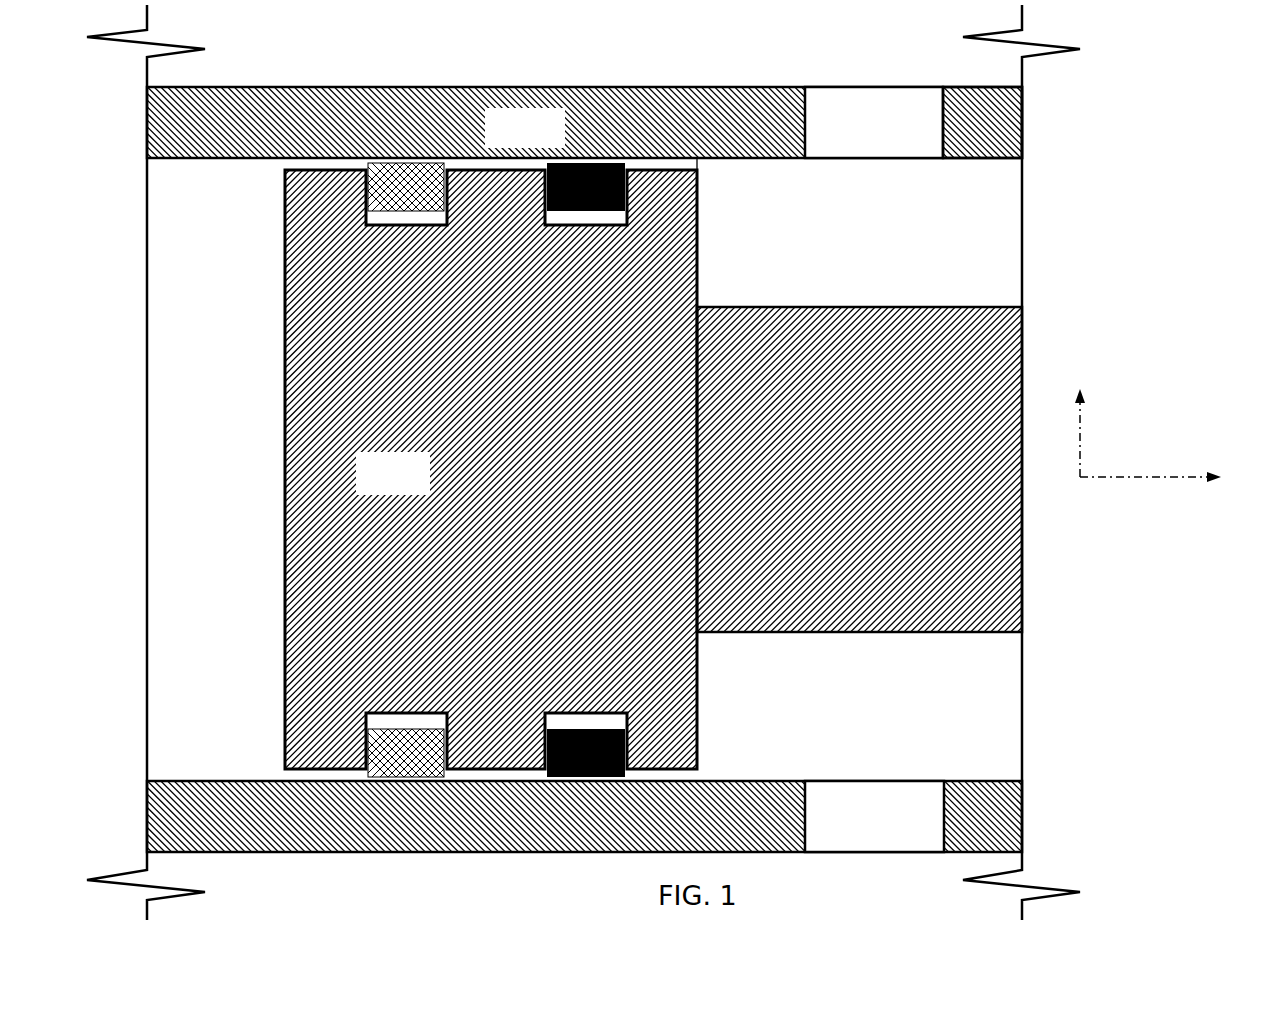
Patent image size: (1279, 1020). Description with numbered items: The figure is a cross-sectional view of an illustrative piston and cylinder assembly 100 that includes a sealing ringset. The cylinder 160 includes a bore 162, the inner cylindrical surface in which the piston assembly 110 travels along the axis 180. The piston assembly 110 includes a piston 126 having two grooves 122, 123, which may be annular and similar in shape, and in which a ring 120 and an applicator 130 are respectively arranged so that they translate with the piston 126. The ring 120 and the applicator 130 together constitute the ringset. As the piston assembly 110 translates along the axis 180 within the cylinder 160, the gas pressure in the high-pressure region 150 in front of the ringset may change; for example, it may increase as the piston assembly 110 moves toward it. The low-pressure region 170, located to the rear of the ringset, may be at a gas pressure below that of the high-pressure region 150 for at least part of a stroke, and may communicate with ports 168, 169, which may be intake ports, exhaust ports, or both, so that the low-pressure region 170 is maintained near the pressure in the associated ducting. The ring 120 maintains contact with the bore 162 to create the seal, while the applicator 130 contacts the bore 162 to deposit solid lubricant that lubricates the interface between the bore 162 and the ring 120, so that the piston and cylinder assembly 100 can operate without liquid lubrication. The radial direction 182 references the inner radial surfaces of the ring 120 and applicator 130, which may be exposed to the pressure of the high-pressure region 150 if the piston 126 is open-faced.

The piston and cylinder assembly 100 is at (948, 71).
The piston assembly 110 is at (406, 469).
The ring 120 is at (408, 172).
The groove 122 is at (343, 712).
The groove 123 is at (530, 712).
The piston 126 is at (412, 481).
The applicator 130 is at (586, 172).
The high-pressure region 150 is at (218, 398).
The cylinder 160 is at (545, 134).
The bore 162 is at (1000, 168).
The port 168 is at (893, 134).
The port 169 is at (893, 829).
The low-pressure region 170 is at (832, 239).
The axis 180 is at (1177, 478).
The radial direction 182 is at (1090, 422).